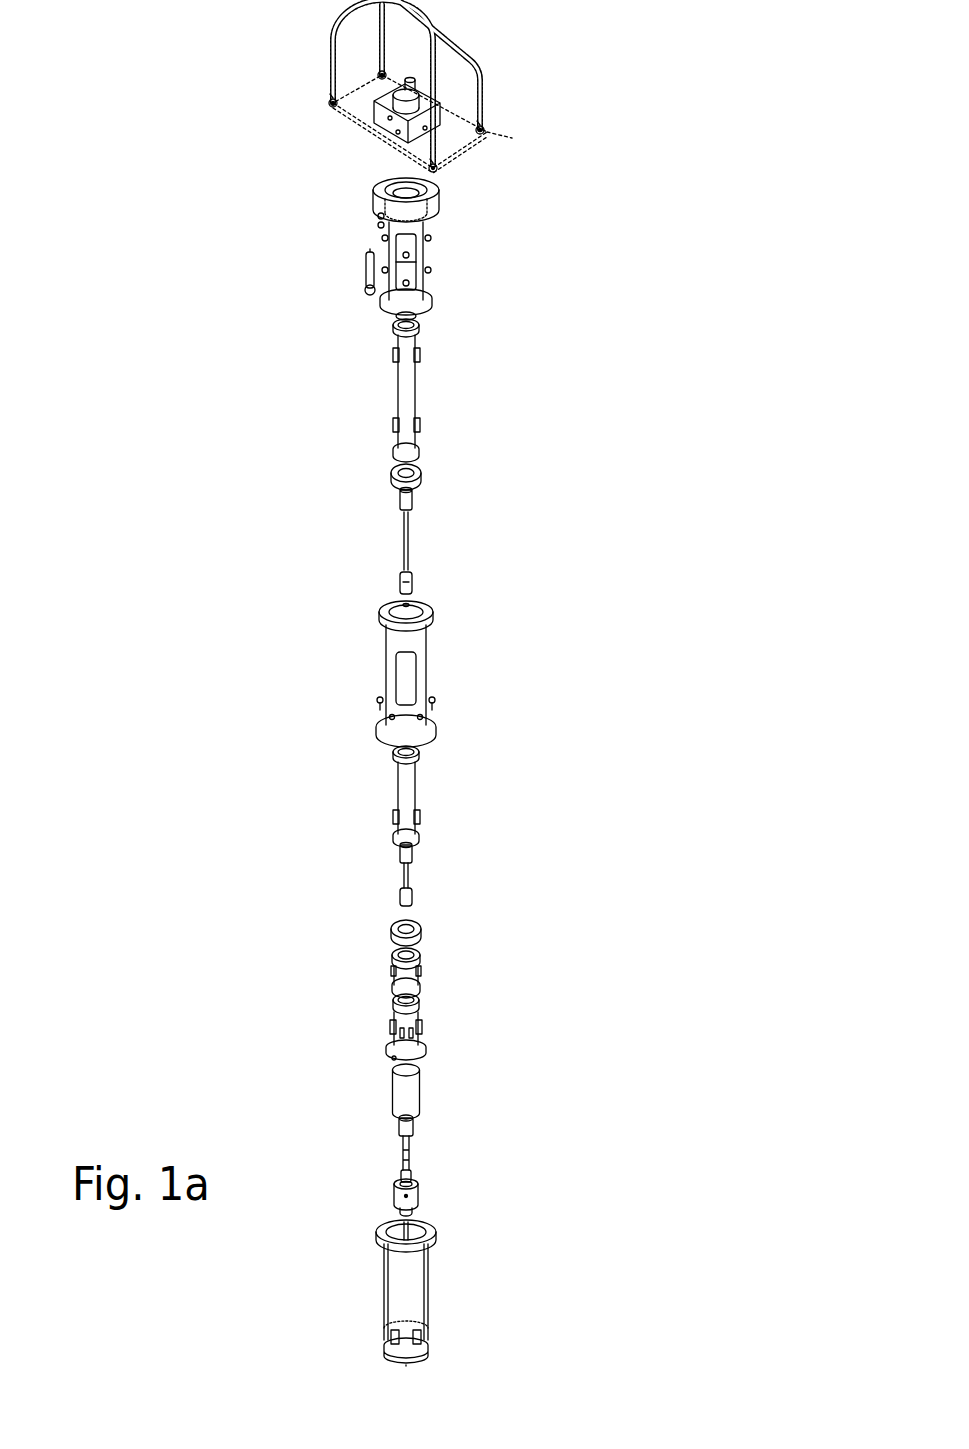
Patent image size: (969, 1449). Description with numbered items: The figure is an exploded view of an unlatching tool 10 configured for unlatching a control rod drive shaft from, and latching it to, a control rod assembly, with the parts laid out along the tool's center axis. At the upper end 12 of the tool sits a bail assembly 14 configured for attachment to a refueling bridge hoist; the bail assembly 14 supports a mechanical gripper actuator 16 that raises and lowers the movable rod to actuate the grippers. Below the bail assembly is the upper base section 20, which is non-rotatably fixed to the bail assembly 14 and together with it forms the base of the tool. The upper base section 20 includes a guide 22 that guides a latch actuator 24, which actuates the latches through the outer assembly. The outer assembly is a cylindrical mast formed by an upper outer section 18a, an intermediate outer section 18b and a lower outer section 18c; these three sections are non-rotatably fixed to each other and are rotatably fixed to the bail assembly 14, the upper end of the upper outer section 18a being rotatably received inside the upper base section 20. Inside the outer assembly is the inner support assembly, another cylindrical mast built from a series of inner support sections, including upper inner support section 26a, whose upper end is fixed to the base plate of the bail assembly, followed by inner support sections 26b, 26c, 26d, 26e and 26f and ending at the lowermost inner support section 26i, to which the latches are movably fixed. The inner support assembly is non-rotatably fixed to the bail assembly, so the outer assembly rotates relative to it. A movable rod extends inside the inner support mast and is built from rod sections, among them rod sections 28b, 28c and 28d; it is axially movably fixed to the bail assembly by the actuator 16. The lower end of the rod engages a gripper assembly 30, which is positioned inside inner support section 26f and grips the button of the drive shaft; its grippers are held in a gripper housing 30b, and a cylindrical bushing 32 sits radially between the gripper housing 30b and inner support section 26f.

The unlatching tool 10 is at (700, 1135).
The upper end 12 is at (618, 40).
The bail assembly 14 is at (293, 100).
The mechanical gripper actuator 16 is at (380, 85).
The upper outer section 18a is at (330, 235).
The intermediate outer section 18b is at (367, 665).
The lower outer section 18c is at (410, 1278).
The upper base section 20 is at (440, 195).
The guide 22 is at (378, 213).
The latch actuator 24 is at (368, 289).
The upper inner support section 26a is at (418, 387).
The inner support section 26b is at (422, 474).
The inner support section 26c is at (420, 772).
The inner support section 26d is at (425, 932).
The inner support section 26e is at (425, 982).
The inner support section 26f is at (425, 1053).
The lowermost inner support section 26i is at (385, 1353).
The rod section 28b is at (415, 490).
The rod section 28c is at (415, 870).
The rod section 28d is at (398, 1148).
The gripper assembly 30 is at (390, 1190).
The gripper housing 30b is at (420, 1183).
The cylindrical bushing 32 is at (422, 1090).